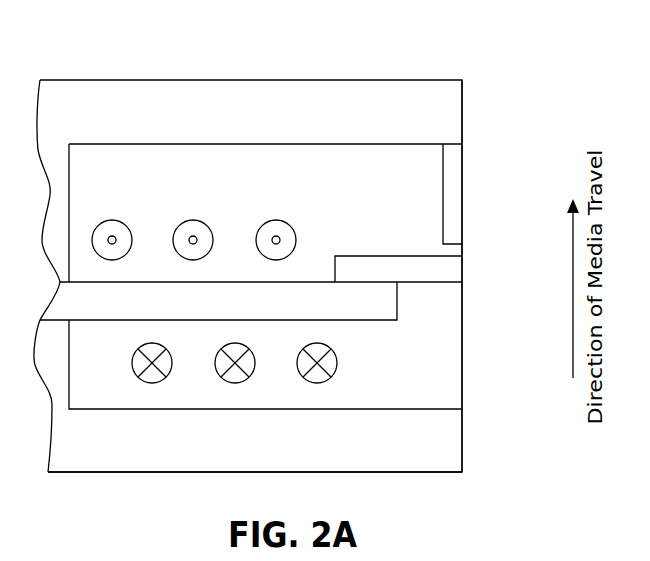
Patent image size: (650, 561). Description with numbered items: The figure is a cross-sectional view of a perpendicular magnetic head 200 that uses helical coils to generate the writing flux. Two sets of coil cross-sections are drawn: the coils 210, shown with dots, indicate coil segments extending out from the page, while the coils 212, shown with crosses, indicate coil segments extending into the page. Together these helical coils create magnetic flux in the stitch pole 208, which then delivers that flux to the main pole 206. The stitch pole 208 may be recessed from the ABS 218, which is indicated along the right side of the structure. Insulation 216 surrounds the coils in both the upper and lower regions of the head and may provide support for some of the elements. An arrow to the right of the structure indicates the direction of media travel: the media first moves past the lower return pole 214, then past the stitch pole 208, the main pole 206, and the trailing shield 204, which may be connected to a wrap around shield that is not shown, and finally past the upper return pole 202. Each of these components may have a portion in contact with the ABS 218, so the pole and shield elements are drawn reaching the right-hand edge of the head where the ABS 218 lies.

The perpendicular magnetic head 200 is at (192, 52).
The upper return pole 202 is at (354, 124).
The trailing shield 204 is at (462, 199).
The main pole 206 is at (462, 263).
The stitch pole 208 is at (287, 312).
The helical coils 210 is at (111, 222).
The helical coils 212 is at (132, 366).
The lower return pole 214 is at (287, 452).
The insulation 216 is at (399, 207).
The ABS 218 is at (471, 103).